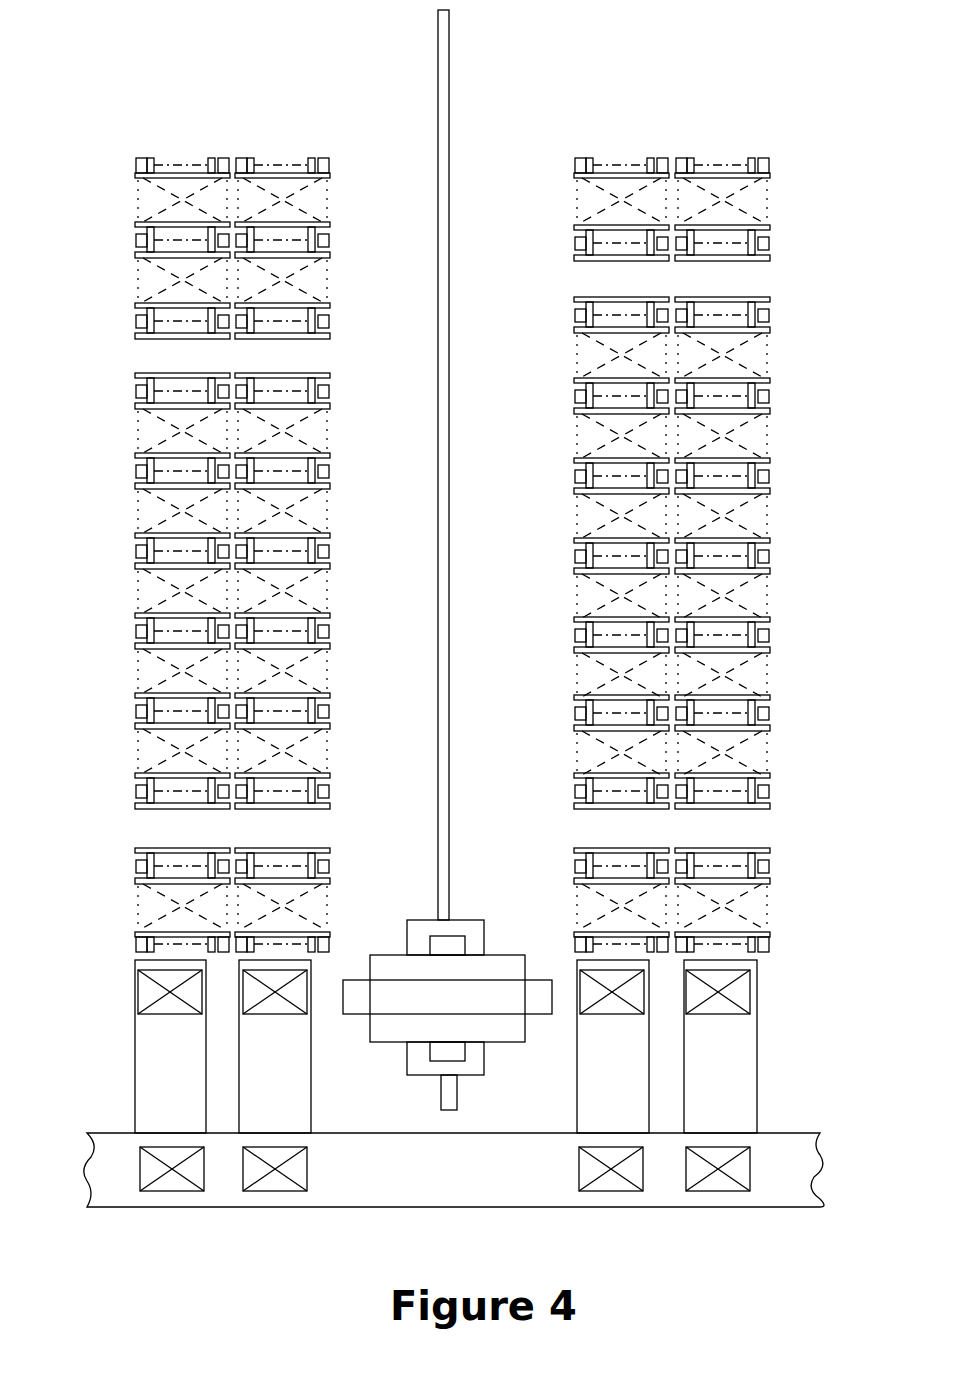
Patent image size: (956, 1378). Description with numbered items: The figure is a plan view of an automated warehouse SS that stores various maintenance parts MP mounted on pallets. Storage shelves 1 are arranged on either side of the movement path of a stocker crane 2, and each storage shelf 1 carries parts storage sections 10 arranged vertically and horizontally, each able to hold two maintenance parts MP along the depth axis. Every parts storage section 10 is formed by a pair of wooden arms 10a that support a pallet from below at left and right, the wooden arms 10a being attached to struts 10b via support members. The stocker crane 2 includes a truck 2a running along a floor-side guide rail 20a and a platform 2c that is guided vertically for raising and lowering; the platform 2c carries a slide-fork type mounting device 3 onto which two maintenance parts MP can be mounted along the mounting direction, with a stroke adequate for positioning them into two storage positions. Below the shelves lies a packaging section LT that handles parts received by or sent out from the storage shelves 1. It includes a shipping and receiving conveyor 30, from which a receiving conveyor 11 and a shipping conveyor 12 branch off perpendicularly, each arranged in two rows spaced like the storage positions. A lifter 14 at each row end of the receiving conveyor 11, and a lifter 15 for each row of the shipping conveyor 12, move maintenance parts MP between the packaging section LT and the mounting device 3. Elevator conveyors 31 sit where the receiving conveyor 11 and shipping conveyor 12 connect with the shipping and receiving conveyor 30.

The automated warehouse SS is at (234, 140).
The storage shelves 1 is at (128, 360).
The parts storage sections 10 is at (238, 367).
The wooden arms 10a is at (135, 570).
The struts 10b is at (135, 712).
The maintenance parts MP is at (132, 203).
The guide rail 20a is at (450, 84).
The stocker crane 2 is at (381, 1046).
The truck 2a is at (465, 921).
The platform 2c is at (510, 1042).
The mounting device 3 is at (456, 1009).
The packaging section LT is at (85, 1036).
The receiving conveyor 11 is at (136, 1089).
The shipping conveyor 12 is at (576, 1089).
The lifter 14 is at (170, 1014).
The lifter 15 is at (611, 1014).
The shipping and receiving conveyor 30 is at (450, 1207).
The elevator conveyors 31 is at (180, 1192).